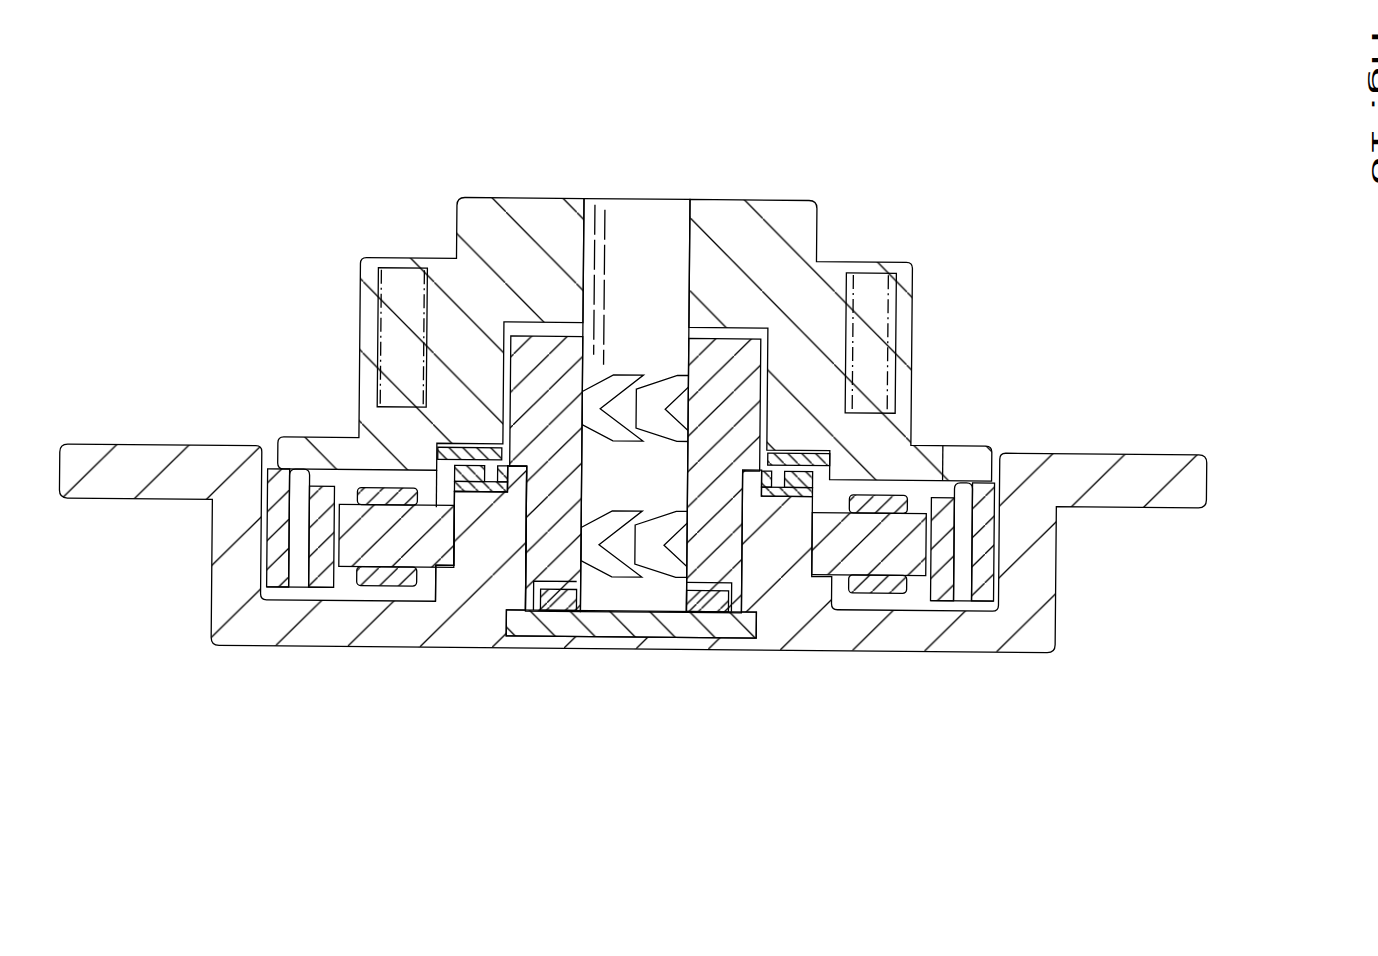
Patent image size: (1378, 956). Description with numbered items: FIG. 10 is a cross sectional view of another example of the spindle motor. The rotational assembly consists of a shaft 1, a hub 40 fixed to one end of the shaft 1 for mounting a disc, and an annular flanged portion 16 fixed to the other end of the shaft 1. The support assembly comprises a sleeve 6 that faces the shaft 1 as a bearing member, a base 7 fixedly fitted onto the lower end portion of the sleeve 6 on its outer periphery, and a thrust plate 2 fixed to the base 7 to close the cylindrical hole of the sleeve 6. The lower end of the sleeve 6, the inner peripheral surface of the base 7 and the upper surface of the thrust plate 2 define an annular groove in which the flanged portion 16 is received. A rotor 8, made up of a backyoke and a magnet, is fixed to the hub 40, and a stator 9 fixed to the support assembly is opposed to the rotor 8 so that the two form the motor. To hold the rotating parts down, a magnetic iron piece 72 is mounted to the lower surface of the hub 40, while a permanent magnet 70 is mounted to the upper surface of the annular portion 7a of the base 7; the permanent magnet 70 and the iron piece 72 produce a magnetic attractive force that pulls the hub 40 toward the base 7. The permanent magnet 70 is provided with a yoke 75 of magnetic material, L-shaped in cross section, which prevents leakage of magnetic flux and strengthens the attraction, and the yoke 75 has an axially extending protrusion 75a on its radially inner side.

The shaft 1 is at (618, 233).
The thrust plate 2 is at (661, 640).
The sleeve 6 is at (746, 377).
The base 7 is at (212, 652).
The annular portion 7a is at (503, 554).
The rotor 8 is at (322, 592).
The stator 9 is at (397, 589).
The flanged portion 16 is at (706, 602).
The hub 40 is at (486, 192).
The permanent magnet 70 is at (850, 592).
The magnetic iron piece 72 is at (790, 447).
The yoke 75 is at (789, 497).
The protrusion 75a is at (765, 488).